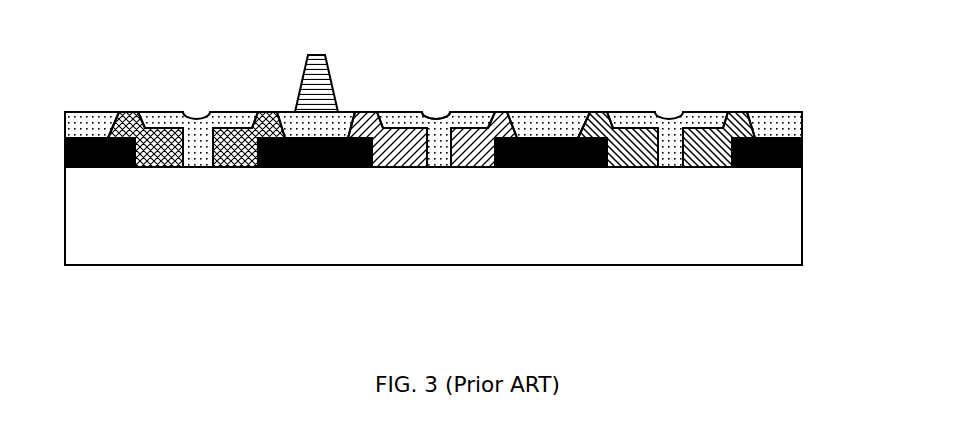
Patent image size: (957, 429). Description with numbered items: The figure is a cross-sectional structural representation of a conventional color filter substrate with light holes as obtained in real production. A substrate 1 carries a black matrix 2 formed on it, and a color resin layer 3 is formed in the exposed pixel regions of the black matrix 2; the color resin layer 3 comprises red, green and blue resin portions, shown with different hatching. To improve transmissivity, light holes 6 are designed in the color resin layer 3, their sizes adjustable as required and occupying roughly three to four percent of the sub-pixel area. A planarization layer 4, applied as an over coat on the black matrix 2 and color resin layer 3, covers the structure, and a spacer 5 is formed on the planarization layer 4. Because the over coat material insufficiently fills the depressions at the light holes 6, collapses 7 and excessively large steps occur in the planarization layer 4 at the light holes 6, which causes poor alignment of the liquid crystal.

The substrate 1 is at (802, 218).
The black matrix 2 is at (802, 152).
The color resin layer 3 is at (695, 120).
The planarization layer 4 is at (552, 122).
The spacer 5 is at (320, 88).
The light holes 6 is at (188, 147).
The collapses 7 is at (438, 112).